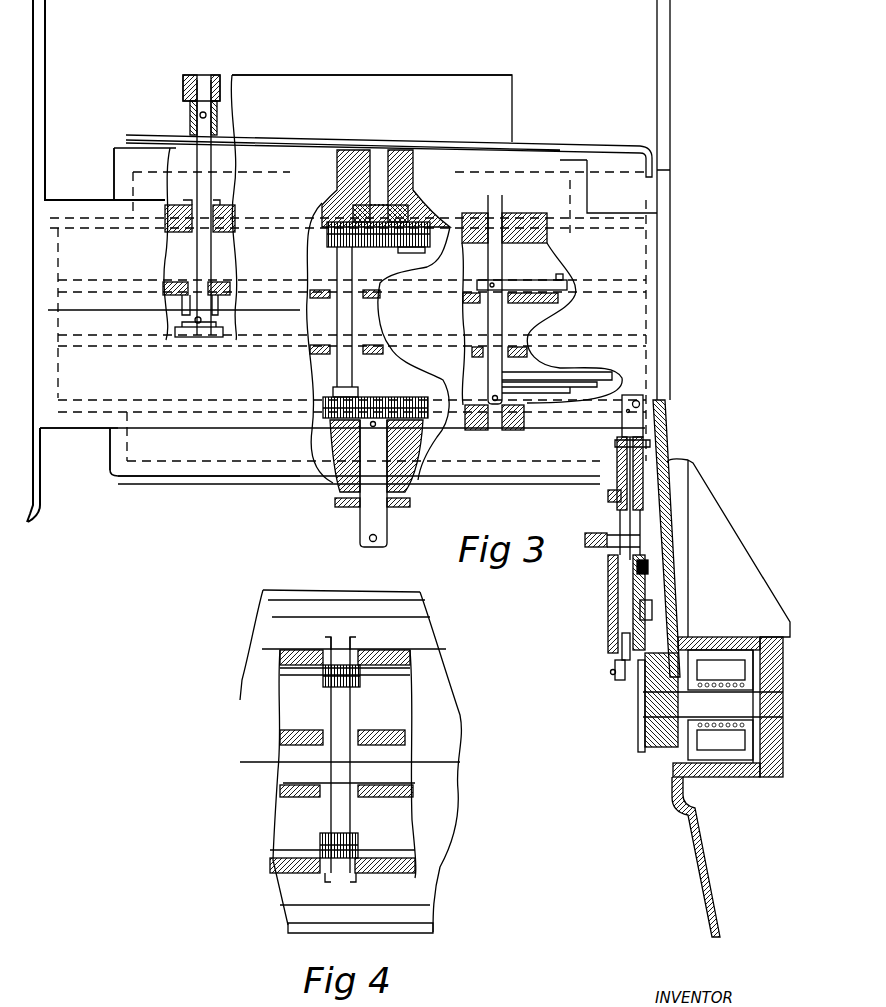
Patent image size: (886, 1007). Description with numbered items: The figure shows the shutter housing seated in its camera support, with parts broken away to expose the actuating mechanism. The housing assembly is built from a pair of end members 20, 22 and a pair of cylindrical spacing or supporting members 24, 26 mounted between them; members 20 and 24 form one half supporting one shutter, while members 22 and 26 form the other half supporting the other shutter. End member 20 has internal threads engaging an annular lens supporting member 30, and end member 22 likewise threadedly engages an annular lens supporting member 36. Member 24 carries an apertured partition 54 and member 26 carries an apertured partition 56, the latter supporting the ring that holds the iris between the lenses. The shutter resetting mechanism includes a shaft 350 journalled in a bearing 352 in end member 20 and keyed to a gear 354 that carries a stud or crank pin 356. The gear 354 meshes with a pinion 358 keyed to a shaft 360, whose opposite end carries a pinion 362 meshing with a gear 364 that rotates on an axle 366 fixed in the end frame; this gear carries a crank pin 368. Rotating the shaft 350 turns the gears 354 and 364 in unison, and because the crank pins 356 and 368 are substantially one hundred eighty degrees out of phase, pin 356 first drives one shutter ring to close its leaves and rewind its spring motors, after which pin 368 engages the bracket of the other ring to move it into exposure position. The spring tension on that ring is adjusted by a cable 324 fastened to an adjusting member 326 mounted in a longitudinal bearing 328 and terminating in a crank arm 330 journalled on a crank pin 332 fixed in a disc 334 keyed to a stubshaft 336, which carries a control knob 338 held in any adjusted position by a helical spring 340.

In FIG. 3, the end member 20 is at (110, 474).
In FIG. 3, the end member 22 is at (116, 163).
In FIG. 3, the cylindrical spacing or supporting member 24 is at (72, 385).
In FIG. 3, the cylindrical spacing or supporting member 26 is at (78, 246).
In FIG. 3, the annular lens supporting member 30 is at (140, 481).
In FIG. 3, the annular lens supporting member 36 is at (275, 78).
In FIG. 3, the apertured partition 54 is at (307, 356).
In FIG. 3, the apertured partition 56 is at (306, 290).
In FIG. 3, the cable 324 is at (638, 412).
In FIG. 3, the adjusting member 326 is at (661, 416).
In FIG. 3, the longitudinal bearing 328 is at (608, 563).
In FIG. 3, the crank arm 330 is at (622, 662).
In FIG. 3, the crank pin 332 is at (613, 678).
In FIG. 3, the disc 334 is at (638, 740).
In FIG. 3, the stubshaft 336 is at (705, 700).
In FIG. 3, the control knob 338 is at (768, 776).
In FIG. 3, the helical spring 340 is at (719, 762).
In FIG. 3, the shaft 350 is at (362, 518).
In FIG. 3, the bearing 352 is at (396, 488).
In FIG. 3, the gear 354 is at (404, 399).
In FIG. 3, the stud or crank pin 356 is at (346, 390).
In FIG. 3, the pinion 358 is at (331, 434).
In FIG. 4, the pinion 358 is at (357, 840).
In FIG. 3, the shaft 360 is at (352, 316).
In FIG. 4, the shaft 360 is at (350, 724).
In FIG. 3, the pinion 362 is at (329, 248).
In FIG. 4, the pinion 362 is at (356, 683).
In FIG. 3, the gear 364 is at (379, 249).
In FIG. 3, the axle 366 is at (379, 158).
In FIG. 3, the crank pin 368 is at (412, 252).